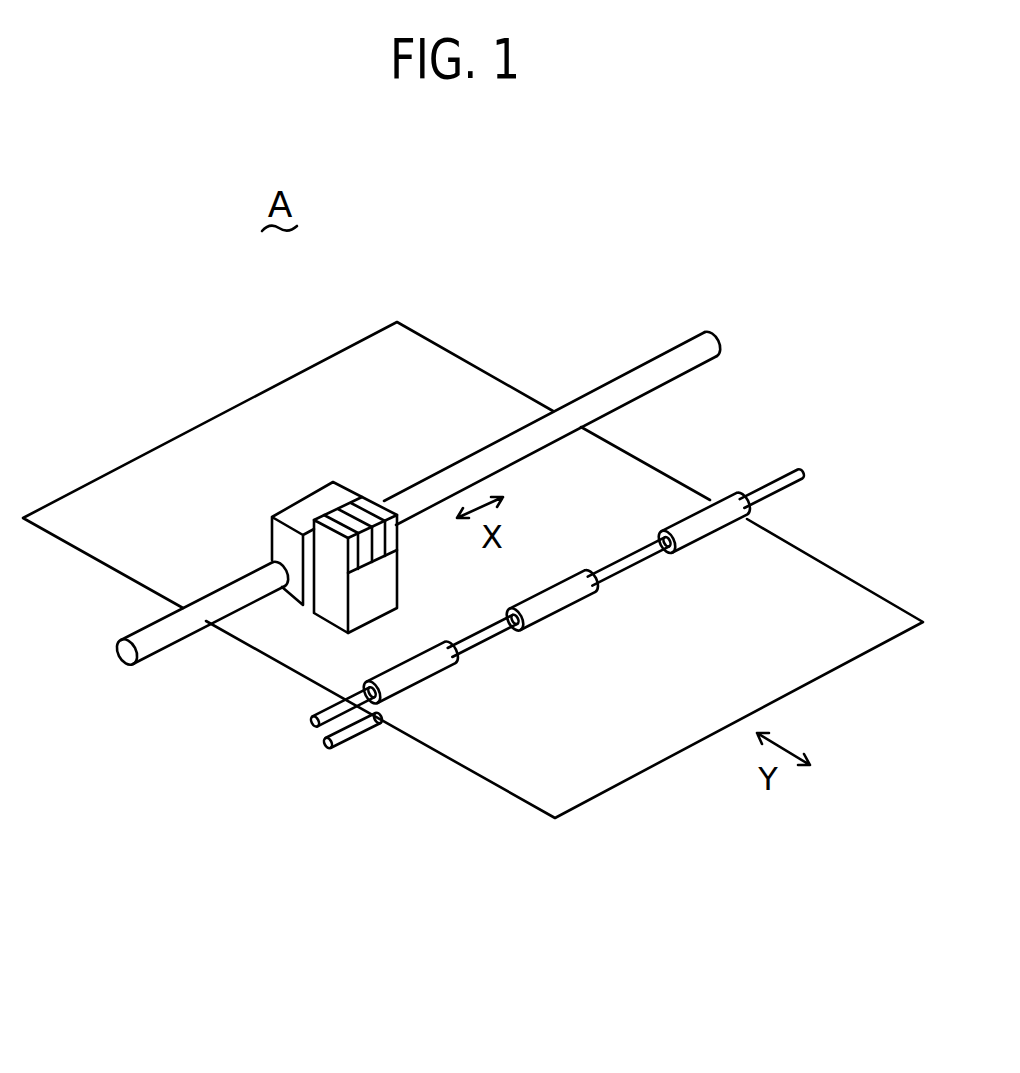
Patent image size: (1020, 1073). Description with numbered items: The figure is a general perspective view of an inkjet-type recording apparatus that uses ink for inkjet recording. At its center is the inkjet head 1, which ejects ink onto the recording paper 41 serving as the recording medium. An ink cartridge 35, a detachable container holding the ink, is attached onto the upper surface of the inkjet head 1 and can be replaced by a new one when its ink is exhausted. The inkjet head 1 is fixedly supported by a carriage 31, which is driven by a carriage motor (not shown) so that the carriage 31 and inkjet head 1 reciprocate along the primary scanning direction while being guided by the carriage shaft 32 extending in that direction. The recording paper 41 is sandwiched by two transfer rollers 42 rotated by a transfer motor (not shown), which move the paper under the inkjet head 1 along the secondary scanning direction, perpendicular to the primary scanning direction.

The inkjet head 1 is at (300, 562).
The carriage 31 is at (307, 492).
The carriage shaft 32 is at (662, 353).
The ink cartridge 35 is at (372, 500).
The recording paper 41 is at (520, 800).
The transfer rollers 42 is at (418, 688).